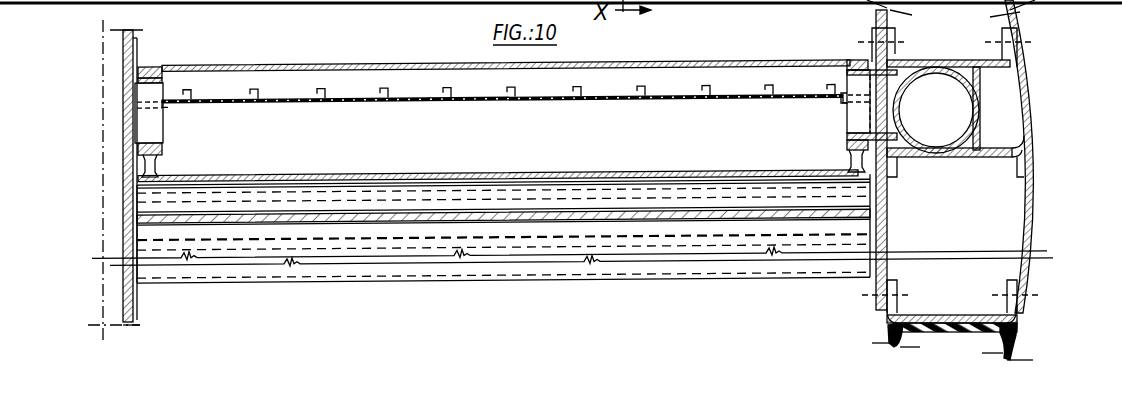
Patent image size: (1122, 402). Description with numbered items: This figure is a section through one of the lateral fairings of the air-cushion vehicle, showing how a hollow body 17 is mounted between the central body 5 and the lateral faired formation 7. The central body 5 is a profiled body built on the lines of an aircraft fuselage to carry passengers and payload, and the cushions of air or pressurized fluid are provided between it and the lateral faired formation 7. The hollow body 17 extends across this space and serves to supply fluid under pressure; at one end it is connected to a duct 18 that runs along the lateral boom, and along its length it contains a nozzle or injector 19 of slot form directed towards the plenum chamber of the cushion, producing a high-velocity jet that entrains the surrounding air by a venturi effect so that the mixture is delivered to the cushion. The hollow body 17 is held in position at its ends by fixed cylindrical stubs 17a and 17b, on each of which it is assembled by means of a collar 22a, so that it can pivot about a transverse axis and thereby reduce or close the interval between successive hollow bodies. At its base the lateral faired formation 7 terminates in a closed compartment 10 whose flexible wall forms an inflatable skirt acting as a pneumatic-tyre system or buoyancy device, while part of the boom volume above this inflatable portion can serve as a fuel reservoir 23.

The central body 5 is at (134, 31).
The lateral faired formation 7 is at (1030, 107).
The closed compartment 10 is at (1017, 333).
The hollow body 17 is at (433, 62).
The cylindrical stub 17a is at (163, 107).
The cylindrical stub 17b is at (850, 61).
The duct 18 is at (935, 85).
The nozzle or injector 19 is at (594, 97).
The collar 22a is at (165, 152).
The fuel reservoir 23 is at (1032, 208).